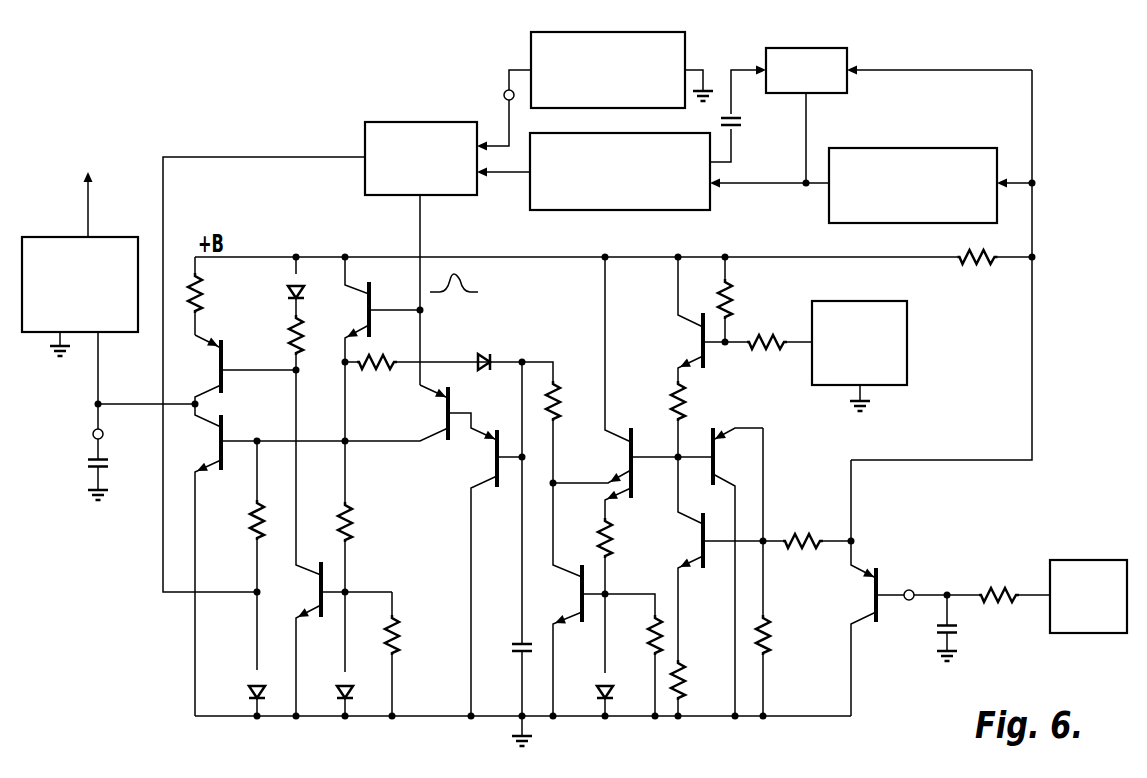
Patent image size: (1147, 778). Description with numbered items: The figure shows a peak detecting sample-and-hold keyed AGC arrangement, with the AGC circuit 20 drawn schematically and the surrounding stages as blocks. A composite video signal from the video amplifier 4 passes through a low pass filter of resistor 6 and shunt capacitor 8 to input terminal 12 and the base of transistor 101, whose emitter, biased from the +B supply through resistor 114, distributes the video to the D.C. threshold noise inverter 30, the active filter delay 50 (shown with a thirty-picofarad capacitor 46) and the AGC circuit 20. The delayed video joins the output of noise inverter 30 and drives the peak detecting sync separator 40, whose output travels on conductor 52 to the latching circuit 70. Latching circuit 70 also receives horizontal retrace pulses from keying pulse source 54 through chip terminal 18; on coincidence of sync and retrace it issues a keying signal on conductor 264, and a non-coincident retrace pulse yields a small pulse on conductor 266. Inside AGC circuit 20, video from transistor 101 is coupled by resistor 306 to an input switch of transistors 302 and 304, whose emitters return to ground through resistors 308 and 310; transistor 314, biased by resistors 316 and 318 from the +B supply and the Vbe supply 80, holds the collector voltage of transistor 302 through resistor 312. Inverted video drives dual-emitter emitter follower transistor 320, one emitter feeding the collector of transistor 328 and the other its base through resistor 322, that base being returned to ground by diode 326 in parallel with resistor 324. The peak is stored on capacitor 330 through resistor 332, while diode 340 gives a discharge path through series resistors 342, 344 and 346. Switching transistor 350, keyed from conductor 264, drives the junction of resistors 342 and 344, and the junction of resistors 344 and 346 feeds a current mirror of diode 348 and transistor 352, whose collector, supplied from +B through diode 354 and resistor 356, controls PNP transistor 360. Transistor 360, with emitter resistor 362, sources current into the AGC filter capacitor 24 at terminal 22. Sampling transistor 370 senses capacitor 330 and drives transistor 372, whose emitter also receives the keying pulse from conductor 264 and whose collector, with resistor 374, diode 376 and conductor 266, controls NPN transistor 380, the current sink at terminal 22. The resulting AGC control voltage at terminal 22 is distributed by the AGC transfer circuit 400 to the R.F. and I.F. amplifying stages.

The video amplifier 4 is at (1088, 560).
The resistor 6 is at (1002, 583).
The shunt capacitor 8 is at (936, 630).
The input terminal 12 is at (910, 592).
The chip terminal 18 is at (505, 92).
The AGC circuit 20 is at (550, 305).
The chip terminal 22 is at (95, 432).
The AGC filter capacitor 24 is at (103, 458).
The D.C. threshold noise inverter 30 is at (918, 132).
The peak detecting sync separator 40 is at (650, 210).
The capacitor 30 pF 46 is at (734, 128).
The active filter delay 50 is at (804, 48).
The conductor 52 is at (522, 174).
The keying pulse source 54 is at (531, 54).
The latching circuit 70 is at (425, 122).
The Vbe supply 80 is at (909, 338).
The transistor 101 is at (874, 595).
The resistor 114 is at (982, 266).
The conductor 264 is at (420, 240).
The conductor 266 is at (254, 160).
The transistor 302 is at (701, 542).
The transistor 304 is at (716, 466).
The resistor 306 is at (793, 529).
The resistor 308 is at (700, 654).
The resistor 310 is at (762, 640).
The resistor 312 is at (686, 404).
The transistor 314 is at (701, 342).
The resistor 316 is at (718, 294).
The resistor 318 is at (766, 348).
The dual-emitter transistor 320 is at (626, 457).
The resistor 322 is at (645, 565).
The resistor 324 is at (650, 632).
The diode 326 is at (602, 676).
The transistor 328 is at (580, 596).
The peak detector capacitor 330 is at (514, 638).
The resistor 332 is at (580, 376).
The diode 340 is at (488, 356).
The resistor 342 is at (398, 373).
The resistor 344 is at (350, 530).
The resistor 346 is at (400, 612).
The diode 348 is at (336, 670).
The switching transistor 350 is at (368, 312).
The transistor 352 is at (318, 592).
The diode 354 is at (292, 286).
The resistor 356 is at (284, 342).
The PNP transistor 360 is at (218, 371).
The resistor 362 is at (225, 310).
The sampling transistor 370 is at (494, 458).
The transistor 372 is at (444, 413).
The resistor 374 is at (250, 542).
The diode 376 is at (255, 668).
The NPN transistor 380 is at (218, 441).
The AGC transfer circuit 400 is at (88, 237).